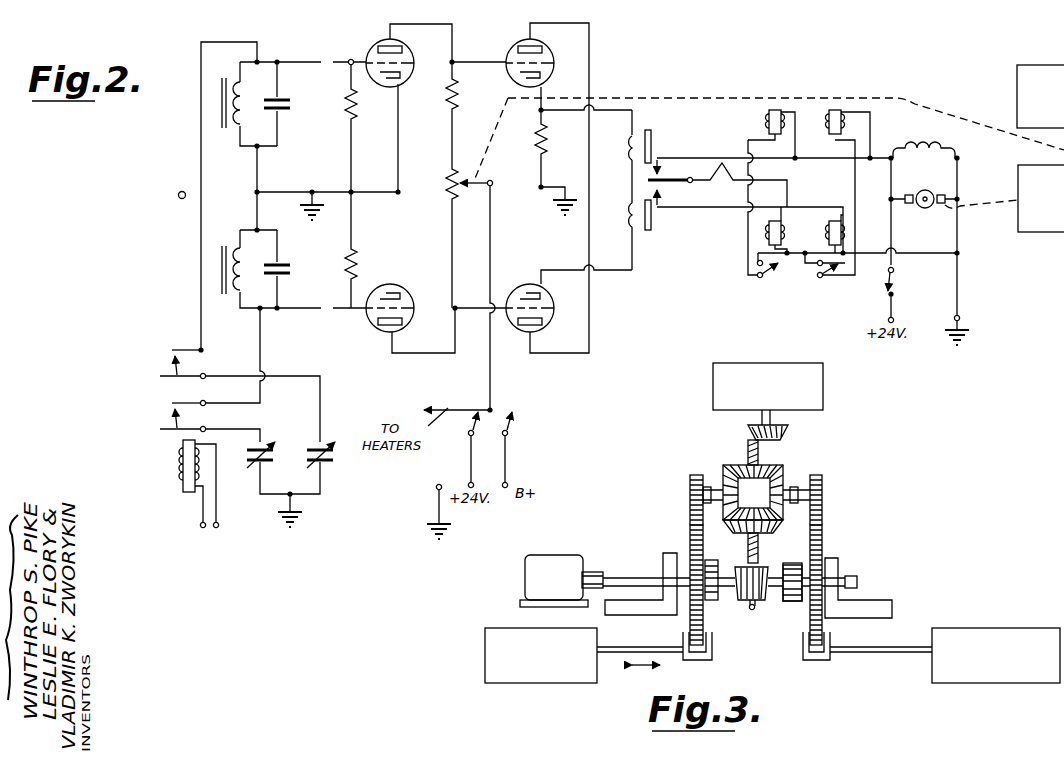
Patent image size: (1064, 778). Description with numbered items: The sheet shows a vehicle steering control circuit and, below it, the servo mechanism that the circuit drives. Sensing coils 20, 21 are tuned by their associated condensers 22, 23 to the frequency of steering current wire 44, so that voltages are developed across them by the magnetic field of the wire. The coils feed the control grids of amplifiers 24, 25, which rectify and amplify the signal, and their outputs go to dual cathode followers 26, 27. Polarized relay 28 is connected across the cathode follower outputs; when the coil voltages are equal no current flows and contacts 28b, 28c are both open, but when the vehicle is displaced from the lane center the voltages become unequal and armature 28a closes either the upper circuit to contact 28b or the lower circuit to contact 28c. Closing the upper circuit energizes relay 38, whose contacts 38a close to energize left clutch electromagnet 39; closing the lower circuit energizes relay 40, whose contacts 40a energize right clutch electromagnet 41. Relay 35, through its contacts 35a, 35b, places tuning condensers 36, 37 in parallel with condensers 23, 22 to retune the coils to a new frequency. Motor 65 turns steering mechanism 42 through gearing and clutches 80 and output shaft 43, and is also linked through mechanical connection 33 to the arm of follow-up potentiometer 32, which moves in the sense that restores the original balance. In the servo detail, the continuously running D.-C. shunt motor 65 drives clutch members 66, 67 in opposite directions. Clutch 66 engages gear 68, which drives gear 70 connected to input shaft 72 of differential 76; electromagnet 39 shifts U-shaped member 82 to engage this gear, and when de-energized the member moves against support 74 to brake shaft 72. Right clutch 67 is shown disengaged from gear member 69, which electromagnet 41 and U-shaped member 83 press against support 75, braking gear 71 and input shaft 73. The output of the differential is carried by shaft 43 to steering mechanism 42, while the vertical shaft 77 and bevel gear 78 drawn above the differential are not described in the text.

In FIG. 2, the sensing coil 20 is at (240, 130).
In FIG. 2, the sensing coil 21 is at (240, 250).
In FIG. 2, the condenser 22 is at (290, 108).
In FIG. 2, the condenser 23 is at (290, 265).
In FIG. 2, the amplifier 24 is at (437, 49).
In FIG. 2, the amplifier 25 is at (366, 347).
In FIG. 2, the cathode follower 26 is at (574, 49).
In FIG. 2, the cathode follower 27 is at (578, 339).
In FIG. 2, the polarized relay 28 is at (619, 196).
In FIG. 2, the relay armature 28a is at (700, 163).
In FIG. 2, the relay contact 28b is at (660, 158).
In FIG. 2, the relay contact 28c is at (660, 210).
In FIG. 2, the follow-up potentiometer 32 is at (452, 193).
In FIG. 2, the mechanical connection 33 is at (694, 98).
In FIG. 2, the relay 35 is at (160, 479).
In FIG. 2, the relay contact 35a is at (172, 412).
In FIG. 2, the relay contact 35b is at (172, 371).
In FIG. 2, the tuning condenser 36 is at (258, 460).
In FIG. 2, the tuning condenser 37 is at (326, 463).
In FIG. 2, the relay 38 is at (800, 298).
In FIG. 2, the relay contacts 38a is at (760, 279).
In FIG. 2, the left clutch electromagnet 39 is at (775, 109).
In FIG. 3, the left clutch electromagnet 39 is at (508, 628).
In FIG. 2, the relay 40 is at (857, 309).
In FIG. 2, the relay contacts 40a is at (820, 280).
In FIG. 2, the right clutch electromagnet 41 is at (835, 109).
In FIG. 3, the right clutch electromagnet 41 is at (963, 628).
In FIG. 2, the steering mechanism 42 is at (1060, 65).
In FIG. 3, the steering mechanism 42 is at (823, 375).
In FIG. 3, the output shaft 43 is at (772, 419).
In FIG. 2, the steering current wire 44 is at (180, 198).
In FIG. 2, the D.-C. shunt motor 65 is at (931, 187).
In FIG. 3, the D.-C. shunt motor 65 is at (571, 556).
In FIG. 3, the clutch member 66 is at (750, 604).
In FIG. 3, the clutch member 67 is at (790, 603).
In FIG. 3, the gear 68 is at (690, 530).
In FIG. 3, the gear member 69 is at (822, 527).
In FIG. 3, the gear 70 is at (703, 492).
In FIG. 3, the gear 71 is at (822, 492).
In FIG. 3, the input shaft 72 is at (700, 478).
In FIG. 3, the input shaft 73 is at (805, 478).
In FIG. 3, the support 74 is at (668, 616).
In FIG. 3, the support 75 is at (838, 572).
In FIG. 3, the differential 76 is at (762, 504).
In FIG. 3, the shaft 77 is at (749, 456).
In FIG. 3, the bevel gear 78 is at (748, 432).
In FIG. 2, the gearing and clutches 80 is at (1020, 232).
In FIG. 3, the U-shaped member 82 is at (714, 646).
In FIG. 3, the U-shaped member 83 is at (805, 652).